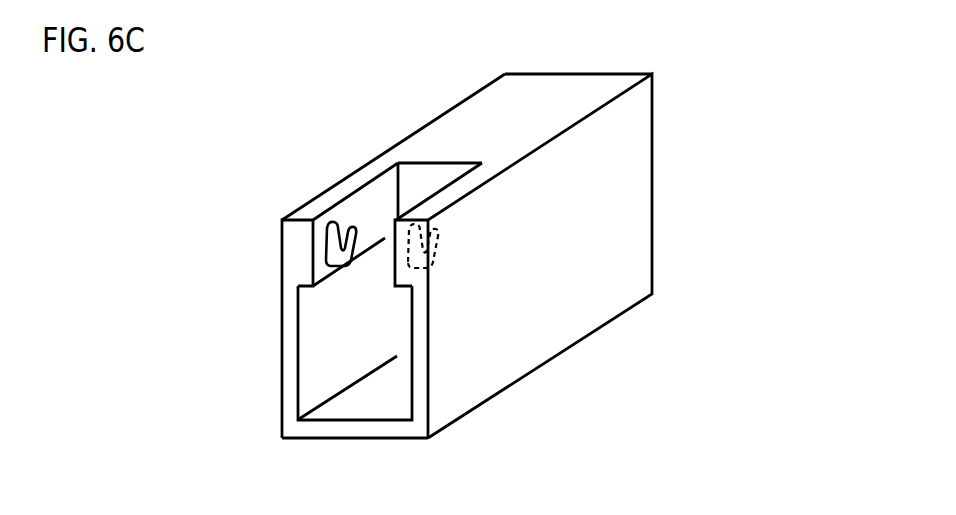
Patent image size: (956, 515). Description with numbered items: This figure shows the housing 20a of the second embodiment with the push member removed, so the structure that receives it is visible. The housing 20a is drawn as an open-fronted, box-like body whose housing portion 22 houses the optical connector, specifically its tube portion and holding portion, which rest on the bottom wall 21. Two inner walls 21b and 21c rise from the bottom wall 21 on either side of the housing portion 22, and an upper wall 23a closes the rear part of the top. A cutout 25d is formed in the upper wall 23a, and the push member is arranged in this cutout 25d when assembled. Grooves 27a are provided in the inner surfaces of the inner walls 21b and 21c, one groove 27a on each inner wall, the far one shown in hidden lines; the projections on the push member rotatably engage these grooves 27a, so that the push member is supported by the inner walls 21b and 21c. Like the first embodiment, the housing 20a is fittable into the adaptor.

The housing 20a is at (653, 107).
The bottom wall 21 is at (352, 430).
The inner wall 21b is at (297, 278).
The inner wall 21c is at (568, 293).
The housing portion 22 is at (323, 375).
The upper wall 23a is at (588, 95).
The cutout 25d is at (422, 181).
The groove 27a is at (333, 242).